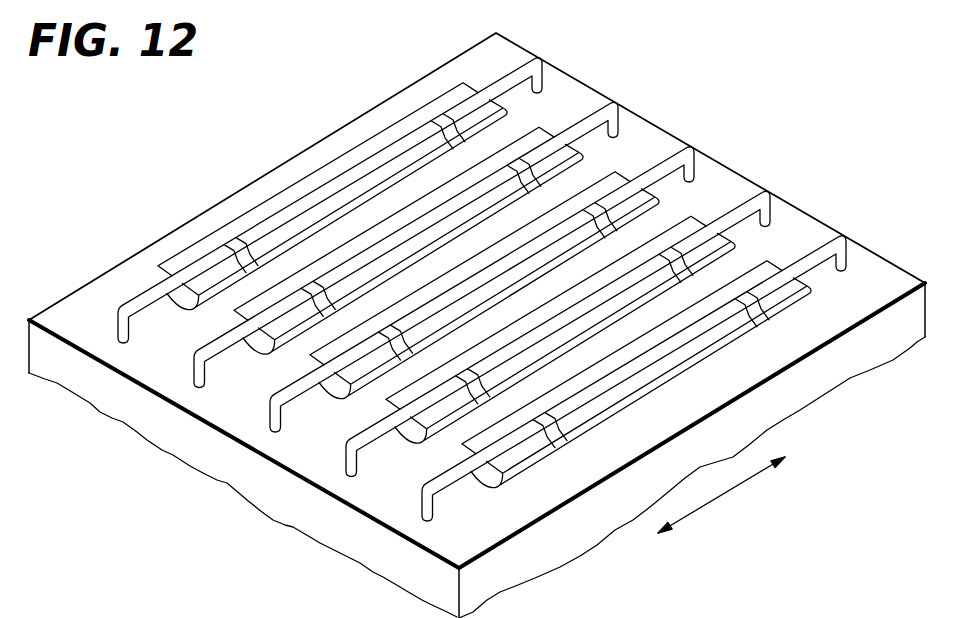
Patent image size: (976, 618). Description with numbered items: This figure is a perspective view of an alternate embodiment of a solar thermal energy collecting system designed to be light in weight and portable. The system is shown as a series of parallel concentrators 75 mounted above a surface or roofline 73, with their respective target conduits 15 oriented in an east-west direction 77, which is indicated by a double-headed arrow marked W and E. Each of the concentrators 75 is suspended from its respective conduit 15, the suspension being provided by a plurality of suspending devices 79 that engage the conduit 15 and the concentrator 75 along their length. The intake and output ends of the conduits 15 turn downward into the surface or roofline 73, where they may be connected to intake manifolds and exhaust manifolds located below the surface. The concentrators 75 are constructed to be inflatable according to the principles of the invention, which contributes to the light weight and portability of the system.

The target conduit 15 is at (197, 386).
The surface or roofline 73 is at (362, 114).
The concentrator 75 is at (447, 92).
The east-west direction 77 is at (740, 487).
The suspending device 79 is at (231, 301).